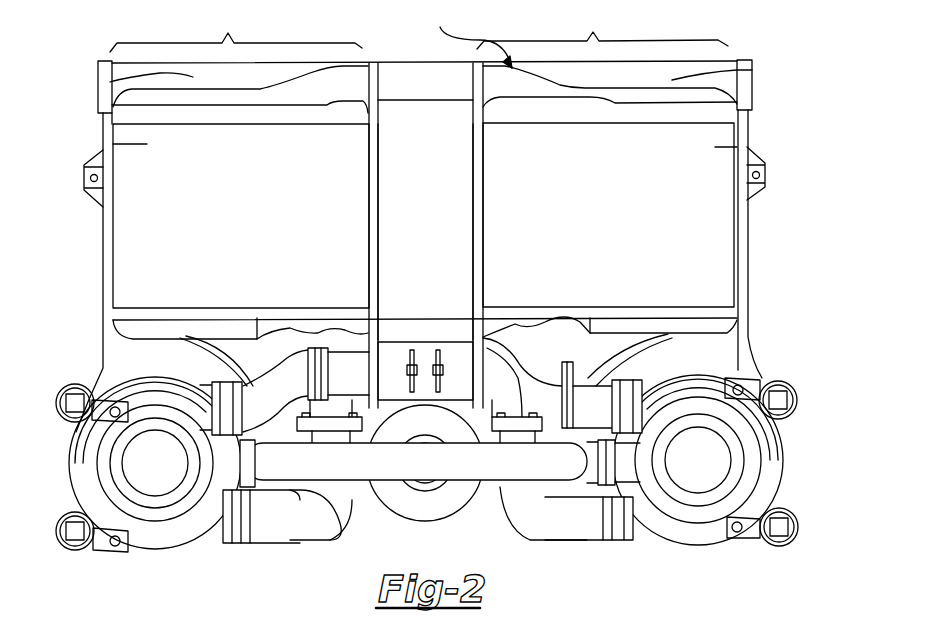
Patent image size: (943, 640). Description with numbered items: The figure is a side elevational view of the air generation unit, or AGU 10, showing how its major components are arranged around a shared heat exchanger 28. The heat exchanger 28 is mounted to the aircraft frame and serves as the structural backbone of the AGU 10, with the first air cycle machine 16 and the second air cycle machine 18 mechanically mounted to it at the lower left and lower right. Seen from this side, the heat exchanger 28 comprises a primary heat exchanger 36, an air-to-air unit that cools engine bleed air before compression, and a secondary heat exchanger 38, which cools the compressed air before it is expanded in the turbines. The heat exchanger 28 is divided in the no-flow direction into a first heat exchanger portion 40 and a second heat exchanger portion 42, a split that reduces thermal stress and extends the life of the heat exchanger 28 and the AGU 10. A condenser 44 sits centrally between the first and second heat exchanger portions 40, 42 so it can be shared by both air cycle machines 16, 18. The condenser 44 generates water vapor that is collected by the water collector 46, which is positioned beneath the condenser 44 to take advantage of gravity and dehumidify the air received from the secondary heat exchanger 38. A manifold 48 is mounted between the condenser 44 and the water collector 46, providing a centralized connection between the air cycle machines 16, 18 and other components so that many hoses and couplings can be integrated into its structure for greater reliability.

The AGU 10 is at (818, 73).
The first air cycle machine 16 is at (157, 562).
The second air cycle machine 18 is at (722, 555).
The heat exchanger 28 is at (470, 35).
The primary heat exchanger 36 is at (110, 82).
The secondary heat exchanger 38 is at (147, 144).
The first heat exchanger portion 40 is at (236, 29).
The second heat exchanger portion 42 is at (602, 27).
The condenser 44 is at (403, 180).
The water collector 46 is at (402, 500).
The manifold 48 is at (460, 357).